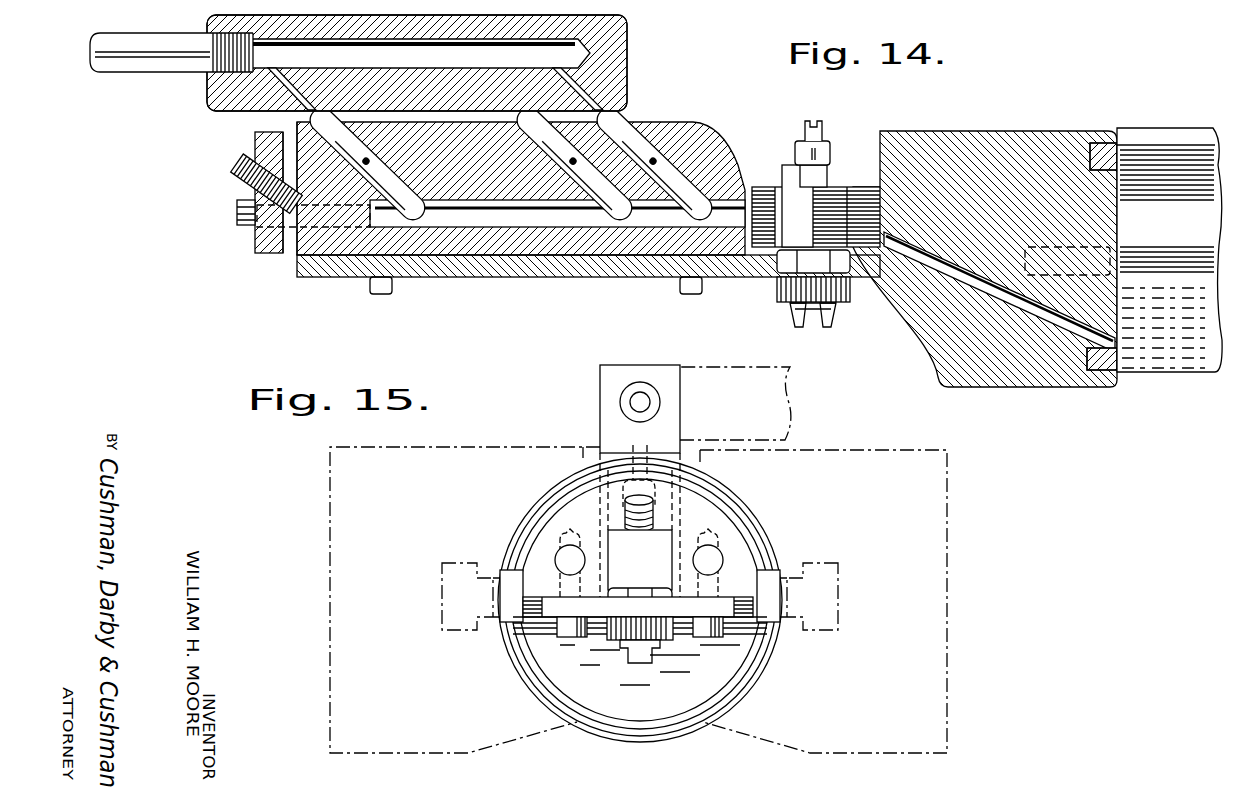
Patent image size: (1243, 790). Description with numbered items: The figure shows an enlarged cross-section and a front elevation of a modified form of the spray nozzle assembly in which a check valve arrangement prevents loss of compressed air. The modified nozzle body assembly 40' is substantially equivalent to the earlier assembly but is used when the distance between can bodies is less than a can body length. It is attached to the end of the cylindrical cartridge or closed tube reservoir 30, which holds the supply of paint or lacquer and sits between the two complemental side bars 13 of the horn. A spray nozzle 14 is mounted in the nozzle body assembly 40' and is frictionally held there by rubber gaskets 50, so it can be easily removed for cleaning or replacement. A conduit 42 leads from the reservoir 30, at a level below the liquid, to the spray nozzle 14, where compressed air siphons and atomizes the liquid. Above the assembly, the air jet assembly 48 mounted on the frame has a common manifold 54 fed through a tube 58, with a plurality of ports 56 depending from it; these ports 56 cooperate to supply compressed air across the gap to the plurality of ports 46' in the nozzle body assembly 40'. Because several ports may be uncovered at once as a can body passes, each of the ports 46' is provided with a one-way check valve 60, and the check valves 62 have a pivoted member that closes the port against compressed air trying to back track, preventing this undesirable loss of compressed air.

In FIG. 14, the air jet assembly 48 is at (627, 43).
In FIG. 15, the air jet assembly 48 is at (600, 390).
In FIG. 14, the common manifold 54 is at (368, 58).
In FIG. 14, the tube 58 is at (152, 73).
In FIG. 14, the ports 56 is at (590, 88).
In FIG. 15, the ports 56 is at (600, 427).
In FIG. 14, the ports 46' is at (481, 156).
In FIG. 15, the ports 46' is at (640, 600).
In FIG. 14, the one-way check valves 62 is at (665, 182).
In FIG. 14, the nozzle body assembly 40' is at (501, 180).
In FIG. 14, the rubber gaskets 50 is at (748, 187).
In FIG. 14, the spray nozzle 14 is at (840, 307).
In FIG. 15, the spray nozzle 14 is at (653, 650).
In FIG. 14, the conduit 42 is at (973, 270).
In FIG. 14, the reservoir 30 is at (1163, 377).
In FIG. 15, the side bars 13 is at (493, 447).
In FIG. 15, the one-way check valves 60 is at (587, 450).